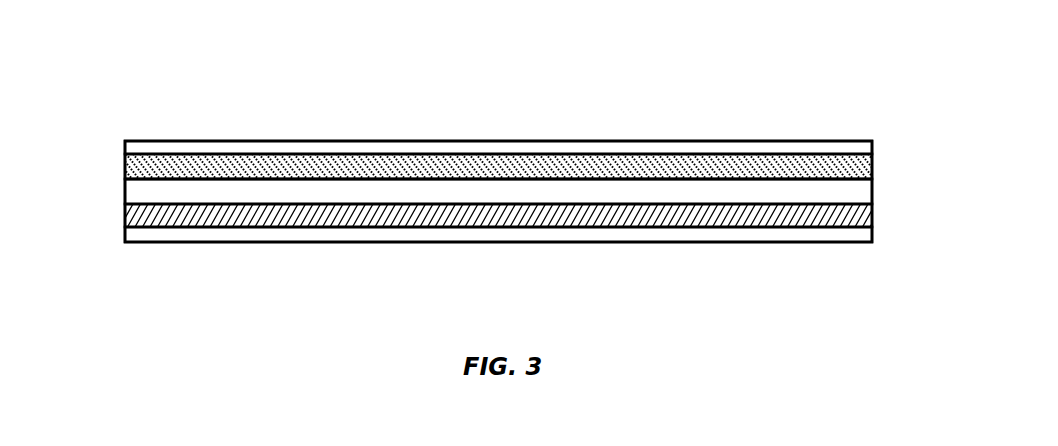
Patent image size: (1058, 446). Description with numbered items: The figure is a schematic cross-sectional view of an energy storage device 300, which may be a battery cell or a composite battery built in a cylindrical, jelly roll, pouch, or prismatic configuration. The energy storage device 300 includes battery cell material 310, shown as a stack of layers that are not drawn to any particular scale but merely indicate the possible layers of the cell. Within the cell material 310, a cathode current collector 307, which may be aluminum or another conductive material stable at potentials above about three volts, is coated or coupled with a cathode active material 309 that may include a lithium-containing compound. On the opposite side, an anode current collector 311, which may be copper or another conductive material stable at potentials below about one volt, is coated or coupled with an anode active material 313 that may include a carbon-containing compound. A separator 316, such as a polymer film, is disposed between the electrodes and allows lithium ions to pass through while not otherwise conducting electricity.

The energy storage device 300 is at (259, 86).
The cathode current collector 307 is at (333, 243).
The cathode active material 309 is at (126, 207).
The battery cell material 310 is at (126, 179).
The anode current collector 311 is at (723, 141).
The anode active material 313 is at (873, 163).
The separator 316 is at (873, 198).